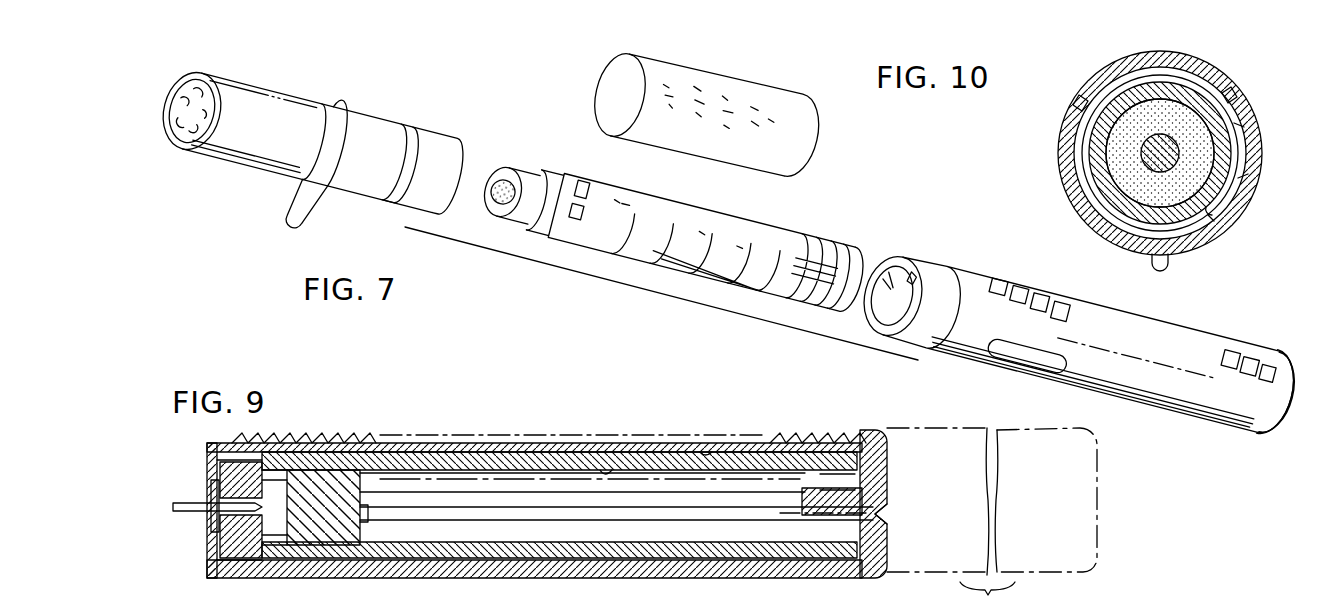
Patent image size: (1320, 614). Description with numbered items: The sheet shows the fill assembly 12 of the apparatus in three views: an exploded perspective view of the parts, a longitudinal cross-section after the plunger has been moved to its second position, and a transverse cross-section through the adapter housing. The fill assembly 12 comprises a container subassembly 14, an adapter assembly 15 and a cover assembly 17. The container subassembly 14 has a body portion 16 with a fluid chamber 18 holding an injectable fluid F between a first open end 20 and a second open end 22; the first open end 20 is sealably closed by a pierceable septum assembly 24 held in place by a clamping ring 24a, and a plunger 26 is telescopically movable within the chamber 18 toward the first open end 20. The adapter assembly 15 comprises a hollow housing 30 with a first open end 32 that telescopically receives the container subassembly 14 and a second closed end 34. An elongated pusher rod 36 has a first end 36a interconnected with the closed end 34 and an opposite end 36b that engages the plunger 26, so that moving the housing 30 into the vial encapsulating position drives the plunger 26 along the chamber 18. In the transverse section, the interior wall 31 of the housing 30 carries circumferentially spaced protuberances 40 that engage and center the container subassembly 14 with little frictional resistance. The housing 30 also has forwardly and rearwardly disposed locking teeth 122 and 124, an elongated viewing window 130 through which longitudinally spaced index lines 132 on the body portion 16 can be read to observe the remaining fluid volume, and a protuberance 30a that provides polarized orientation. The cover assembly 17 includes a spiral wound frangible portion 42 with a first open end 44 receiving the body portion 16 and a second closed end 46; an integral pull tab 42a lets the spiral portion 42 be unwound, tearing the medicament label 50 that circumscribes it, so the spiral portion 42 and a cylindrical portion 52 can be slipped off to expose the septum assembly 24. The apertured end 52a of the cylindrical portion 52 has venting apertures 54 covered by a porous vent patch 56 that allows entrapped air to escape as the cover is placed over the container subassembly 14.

In FIG. 7, the fill assembly 12 is at (667, 301).
In FIG. 9, the fill assembly 12 is at (468, 429).
In FIG. 7, the container subassembly 14 is at (672, 230).
In FIG. 10, the container subassembly 14 is at (1187, 153).
In FIG. 9, the container subassembly 14 is at (508, 457).
In FIG. 7, the adapter assembly 15 is at (1079, 365).
In FIG. 10, the adapter assembly 15 is at (1149, 153).
In FIG. 9, the adapter assembly 15 is at (572, 522).
In FIG. 7, the body portion 16 is at (645, 252).
In FIG. 9, the body portion 16 is at (548, 468).
In FIG. 7, the cover assembly 17 is at (306, 154).
In FIG. 9, the fluid chamber 18 is at (610, 470).
In FIG. 9, the first open end 20 is at (262, 470).
In FIG. 7, the second open end 22 is at (821, 272).
In FIG. 9, the second open end 22 is at (842, 470).
In FIG. 7, the septum assembly 24 is at (502, 191).
In FIG. 9, the septum assembly 24 is at (210, 503).
In FIG. 7, the clamping ring 24a is at (515, 195).
In FIG. 9, the clamping ring 24a is at (225, 553).
In FIG. 10, the plunger 26 is at (1121, 163).
In FIG. 9, the plunger 26 is at (355, 468).
In FIG. 7, the hollow housing 30 is at (1078, 343).
In FIG. 10, the hollow housing 30 is at (1177, 141).
In FIG. 9, the hollow housing 30 is at (660, 570).
In FIG. 7, the protuberance 30a is at (1281, 394).
In FIG. 10, the interior wall 31 is at (1236, 232).
In FIG. 9, the interior wall 31 is at (702, 452).
In FIG. 7, the first open end 32 is at (892, 296).
In FIG. 9, the first open end 32 is at (208, 452).
In FIG. 7, the second closed end 34 is at (1278, 395).
In FIG. 9, the second closed end 34 is at (888, 500).
In FIG. 10, the pusher rod 36 is at (1095, 158).
In FIG. 9, the pusher rod 36 is at (578, 520).
In FIG. 9, the first end 36a is at (880, 516).
In FIG. 9, the opposite end 36b is at (366, 516).
In FIG. 7, the protuberances 40 is at (912, 278).
In FIG. 10, the protuberances 40 is at (1148, 185).
In FIG. 7, the spiral wound frangible portion 42 is at (329, 142).
In FIG. 7, the pull tab 42a is at (305, 206).
In FIG. 7, the first open end 44 is at (403, 165).
In FIG. 7, the second closed end 46 is at (192, 110).
In FIG. 7, the medicament label 50 is at (812, 136).
In FIG. 7, the cylindrical portion 52 is at (325, 145).
In FIG. 7, the apertured end 52a is at (192, 111).
In FIG. 7, the venting apertures 54 is at (194, 101).
In FIG. 7, the porous vent patch 56 is at (187, 126).
In FIG. 7, the forwardly disposed locking teeth 122 is at (1248, 366).
In FIG. 7, the rearwardly disposed locking teeth 124 is at (1029, 300).
In FIG. 7, the viewing window 130 is at (1027, 355).
In FIG. 10, the viewing window 130 is at (1261, 164).
In FIG. 7, the index lines 132 is at (696, 252).
In FIG. 9, the injectable fluid F is at (270, 565).